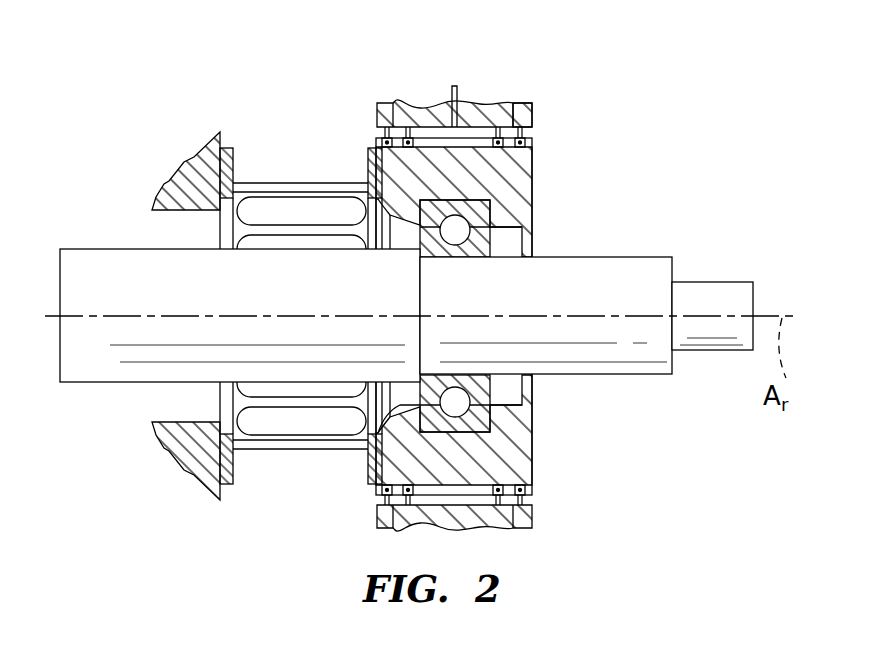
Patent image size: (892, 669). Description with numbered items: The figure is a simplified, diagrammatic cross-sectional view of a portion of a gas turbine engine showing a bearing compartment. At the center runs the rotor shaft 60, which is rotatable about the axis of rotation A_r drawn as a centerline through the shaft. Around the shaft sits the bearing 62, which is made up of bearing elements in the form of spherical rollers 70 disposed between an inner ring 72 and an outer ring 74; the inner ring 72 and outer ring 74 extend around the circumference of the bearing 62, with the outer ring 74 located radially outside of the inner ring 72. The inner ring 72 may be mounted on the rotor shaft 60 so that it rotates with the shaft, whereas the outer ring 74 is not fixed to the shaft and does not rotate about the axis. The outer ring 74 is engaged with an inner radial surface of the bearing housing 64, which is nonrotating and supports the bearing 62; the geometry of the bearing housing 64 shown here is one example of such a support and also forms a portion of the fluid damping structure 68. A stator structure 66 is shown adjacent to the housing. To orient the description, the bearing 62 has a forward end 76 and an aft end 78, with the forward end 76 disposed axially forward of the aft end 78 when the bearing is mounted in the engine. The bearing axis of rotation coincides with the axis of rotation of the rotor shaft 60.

The rotor shaft 60 is at (212, 296).
The bearing 62 is at (516, 216).
The bearing housing 64 is at (518, 173).
The stator structure 66 is at (492, 107).
The fluid damping structure 68 is at (530, 107).
The spherical rollers 70 is at (506, 439).
The inner ring 72 is at (490, 382).
The outer ring 74 is at (487, 422).
The forward end 76 is at (414, 432).
The aft end 78 is at (503, 212).